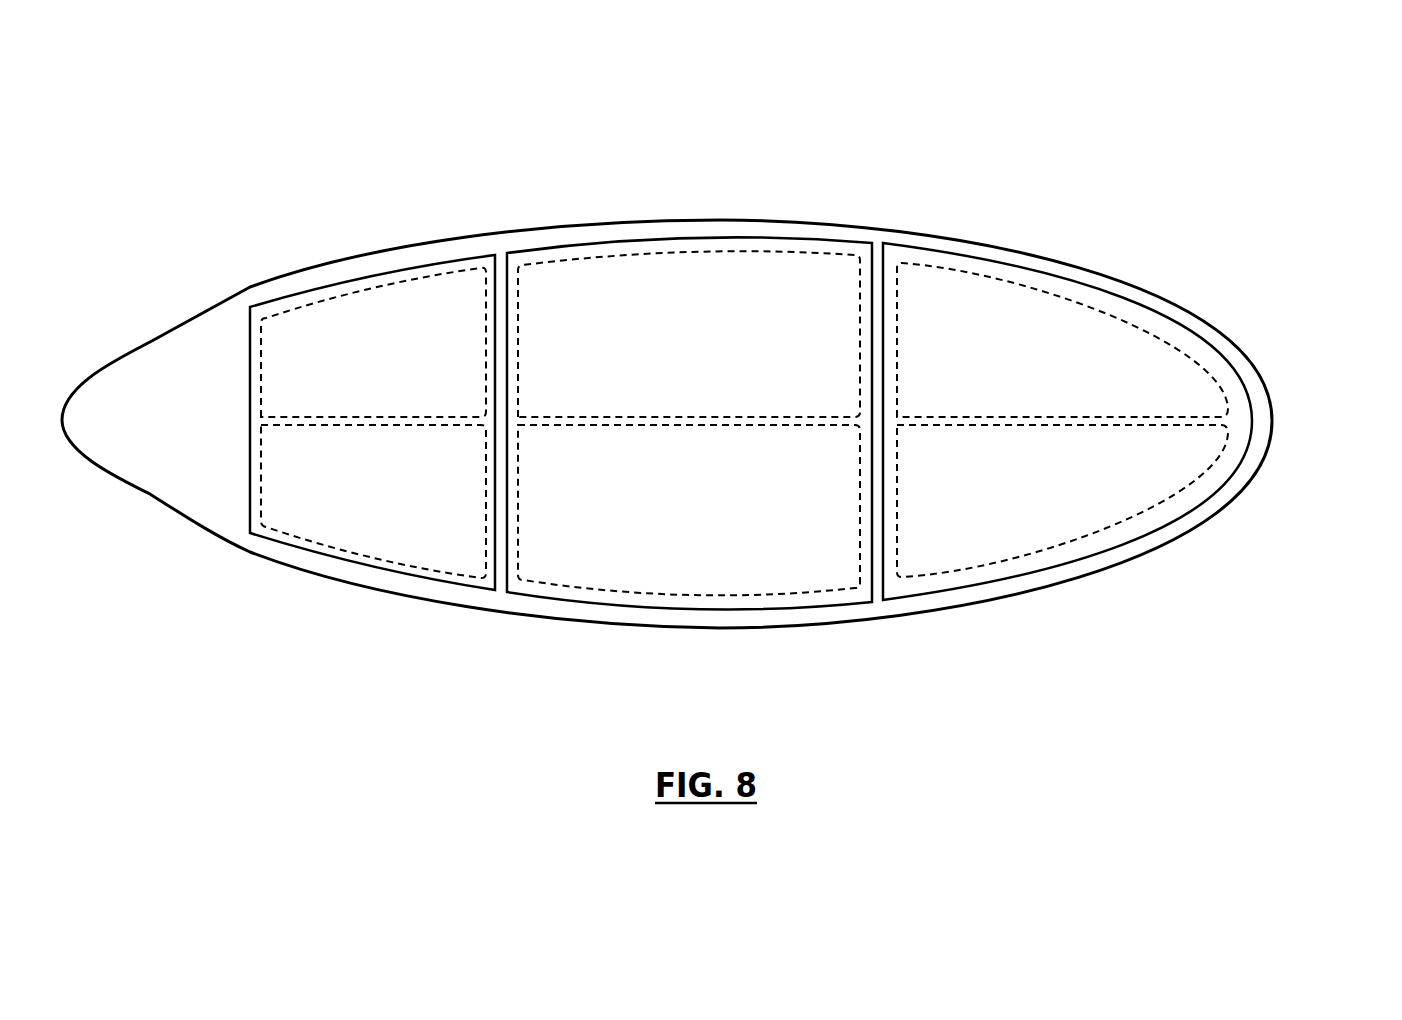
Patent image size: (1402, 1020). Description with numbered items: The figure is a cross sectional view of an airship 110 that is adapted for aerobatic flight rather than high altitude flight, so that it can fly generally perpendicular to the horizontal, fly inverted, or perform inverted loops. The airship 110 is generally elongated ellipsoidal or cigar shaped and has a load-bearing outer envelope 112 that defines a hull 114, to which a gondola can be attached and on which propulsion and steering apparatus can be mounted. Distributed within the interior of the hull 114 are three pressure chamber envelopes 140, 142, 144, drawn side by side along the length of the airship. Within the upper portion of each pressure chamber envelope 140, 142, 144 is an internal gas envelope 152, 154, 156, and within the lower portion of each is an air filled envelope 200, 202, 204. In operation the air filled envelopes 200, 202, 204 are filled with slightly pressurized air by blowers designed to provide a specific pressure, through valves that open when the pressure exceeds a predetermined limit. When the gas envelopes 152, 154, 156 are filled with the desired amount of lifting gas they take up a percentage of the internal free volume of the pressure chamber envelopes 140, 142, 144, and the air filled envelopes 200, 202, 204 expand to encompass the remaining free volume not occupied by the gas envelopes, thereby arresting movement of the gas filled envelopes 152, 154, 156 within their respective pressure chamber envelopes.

The airship 110 is at (713, 365).
The load-bearing outer envelope 112 is at (1258, 372).
The hull 114 is at (1268, 465).
The pressure chamber envelope 140 is at (474, 259).
The pressure chamber envelope 142 is at (673, 240).
The pressure chamber envelope 144 is at (980, 258).
The internal gas envelope 152 is at (378, 262).
The internal gas envelope 154 is at (770, 252).
The internal gas envelope 156 is at (1048, 280).
The air filled envelope 200 is at (430, 573).
The air filled envelope 202 is at (794, 597).
The air filled envelope 204 is at (1027, 575).